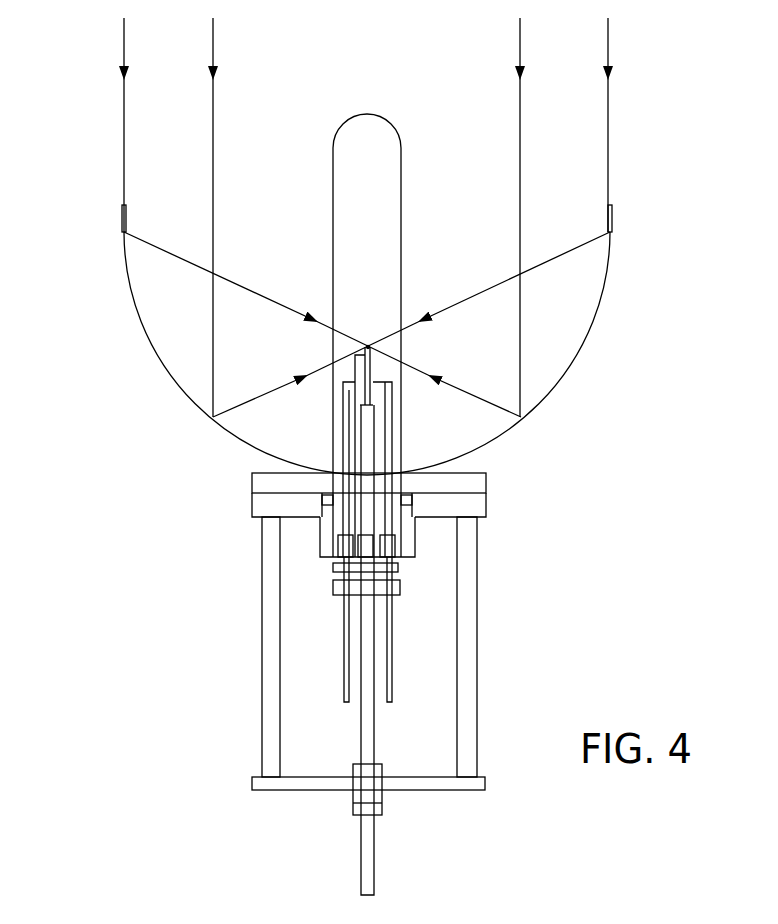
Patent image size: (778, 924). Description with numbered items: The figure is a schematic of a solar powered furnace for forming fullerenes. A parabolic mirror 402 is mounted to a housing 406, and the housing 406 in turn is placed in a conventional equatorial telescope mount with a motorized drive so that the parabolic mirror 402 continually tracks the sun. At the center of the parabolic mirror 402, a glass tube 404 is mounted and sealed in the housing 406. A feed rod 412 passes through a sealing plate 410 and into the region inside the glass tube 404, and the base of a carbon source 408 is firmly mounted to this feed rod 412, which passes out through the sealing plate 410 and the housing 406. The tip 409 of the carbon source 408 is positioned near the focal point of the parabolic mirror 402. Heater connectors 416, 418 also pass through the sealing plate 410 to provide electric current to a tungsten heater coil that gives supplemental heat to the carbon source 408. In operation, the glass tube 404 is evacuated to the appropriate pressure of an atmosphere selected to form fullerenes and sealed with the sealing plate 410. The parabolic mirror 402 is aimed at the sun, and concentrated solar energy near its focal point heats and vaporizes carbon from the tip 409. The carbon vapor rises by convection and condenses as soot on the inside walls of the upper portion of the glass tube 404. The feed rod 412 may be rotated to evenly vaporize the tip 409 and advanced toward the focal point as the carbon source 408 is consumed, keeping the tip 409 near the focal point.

The parabolic mirror 402 is at (157, 348).
The glass tube 404 is at (333, 173).
The housing 406 is at (477, 657).
The carbon source 408 is at (362, 393).
The tip 409 is at (368, 347).
The sealing plate 410 is at (400, 588).
The feed rod 412 is at (376, 858).
The heater connector 416 is at (390, 704).
The heater connector 418 is at (347, 704).